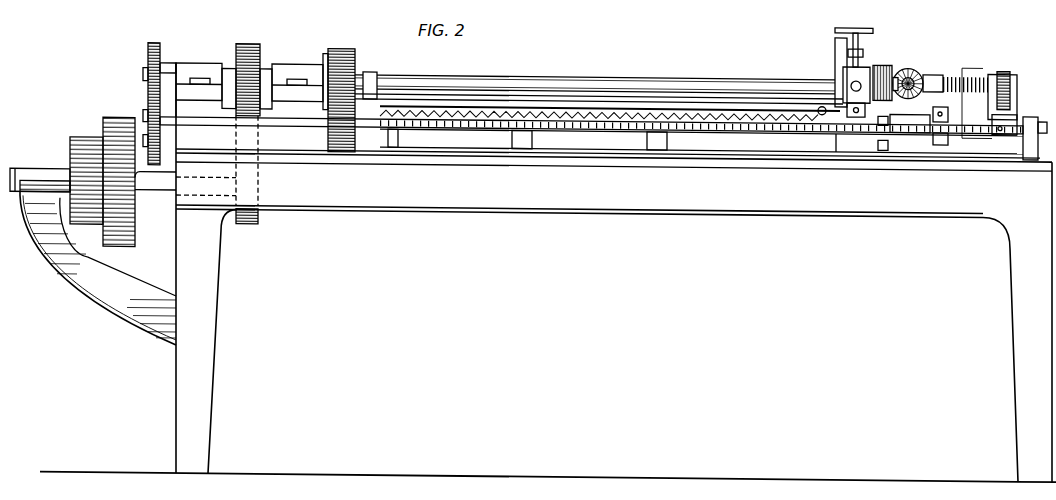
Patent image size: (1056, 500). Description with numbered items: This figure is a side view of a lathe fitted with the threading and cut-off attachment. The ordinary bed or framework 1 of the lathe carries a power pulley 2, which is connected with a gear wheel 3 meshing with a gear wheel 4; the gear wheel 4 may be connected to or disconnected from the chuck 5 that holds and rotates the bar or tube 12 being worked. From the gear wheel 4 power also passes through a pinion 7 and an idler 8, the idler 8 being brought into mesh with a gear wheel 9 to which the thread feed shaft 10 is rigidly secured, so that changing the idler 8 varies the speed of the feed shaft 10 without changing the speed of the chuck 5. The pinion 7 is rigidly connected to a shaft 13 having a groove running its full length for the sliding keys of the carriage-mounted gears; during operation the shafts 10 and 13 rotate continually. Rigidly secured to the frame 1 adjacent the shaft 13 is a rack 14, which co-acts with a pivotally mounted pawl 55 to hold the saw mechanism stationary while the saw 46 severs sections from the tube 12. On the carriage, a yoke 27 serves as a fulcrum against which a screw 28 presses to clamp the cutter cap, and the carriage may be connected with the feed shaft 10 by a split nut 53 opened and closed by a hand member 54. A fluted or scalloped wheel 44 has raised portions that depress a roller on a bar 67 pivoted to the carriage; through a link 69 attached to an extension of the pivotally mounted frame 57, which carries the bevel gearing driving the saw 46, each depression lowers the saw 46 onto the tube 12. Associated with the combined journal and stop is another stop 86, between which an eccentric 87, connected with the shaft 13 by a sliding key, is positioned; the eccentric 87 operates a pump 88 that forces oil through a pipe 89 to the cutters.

The bed or framework 1 is at (538, 271).
The power pulley 2 is at (115, 135).
The gear wheel 3 is at (253, 223).
The gear wheel 4 is at (248, 68).
The chuck 5 is at (342, 58).
The pinion 7 is at (170, 30).
The idler 8 is at (157, 165).
The gear wheel 9 is at (162, 124).
The thread feed shaft 10 is at (296, 122).
The bar or tube 12 is at (632, 96).
The shaft 13 is at (697, 77).
The rack 14 is at (470, 106).
The yoke 27 is at (866, 48).
The screw 28 is at (860, 32).
The scalloped wheel 44 is at (853, 75).
The saw 46 is at (900, 60).
The split nut 53 is at (900, 124).
The hand member 54 is at (900, 9).
The pawl 55 is at (947, 9).
The frame 57 is at (935, 68).
The bar 67 is at (701, 127).
The link 69 is at (906, 60).
The stop 86 is at (1014, 78).
The eccentric 87 is at (1006, 64).
The pump 88 is at (1010, 108).
The pipe 89 is at (960, 64).